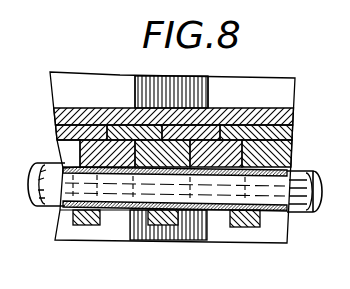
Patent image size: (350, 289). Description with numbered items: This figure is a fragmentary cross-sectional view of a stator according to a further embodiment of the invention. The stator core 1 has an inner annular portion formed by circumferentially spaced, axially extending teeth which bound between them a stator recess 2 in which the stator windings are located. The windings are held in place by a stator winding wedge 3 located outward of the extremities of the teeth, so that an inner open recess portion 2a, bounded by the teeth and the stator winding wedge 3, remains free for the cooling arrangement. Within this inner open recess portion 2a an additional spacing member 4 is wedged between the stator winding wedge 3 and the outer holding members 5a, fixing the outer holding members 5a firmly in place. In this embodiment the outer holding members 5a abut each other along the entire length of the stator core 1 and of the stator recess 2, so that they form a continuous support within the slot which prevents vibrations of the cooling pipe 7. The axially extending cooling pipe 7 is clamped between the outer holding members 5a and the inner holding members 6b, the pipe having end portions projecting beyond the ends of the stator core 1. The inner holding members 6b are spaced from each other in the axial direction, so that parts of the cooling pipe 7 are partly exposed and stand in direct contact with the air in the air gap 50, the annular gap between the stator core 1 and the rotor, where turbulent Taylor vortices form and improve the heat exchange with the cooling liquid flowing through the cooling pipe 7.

The stator core 1 is at (208, 97).
The stator recess 2 is at (72, 150).
The inner open recess portion 2a is at (56, 222).
The stator winding wedge 3 is at (288, 121).
The spacing member 4 is at (288, 135).
The outer holding member 5a is at (281, 158).
The cooling pipe 7 is at (298, 190).
The inner holding member 6b is at (245, 227).
The air gap 50 is at (186, 271).